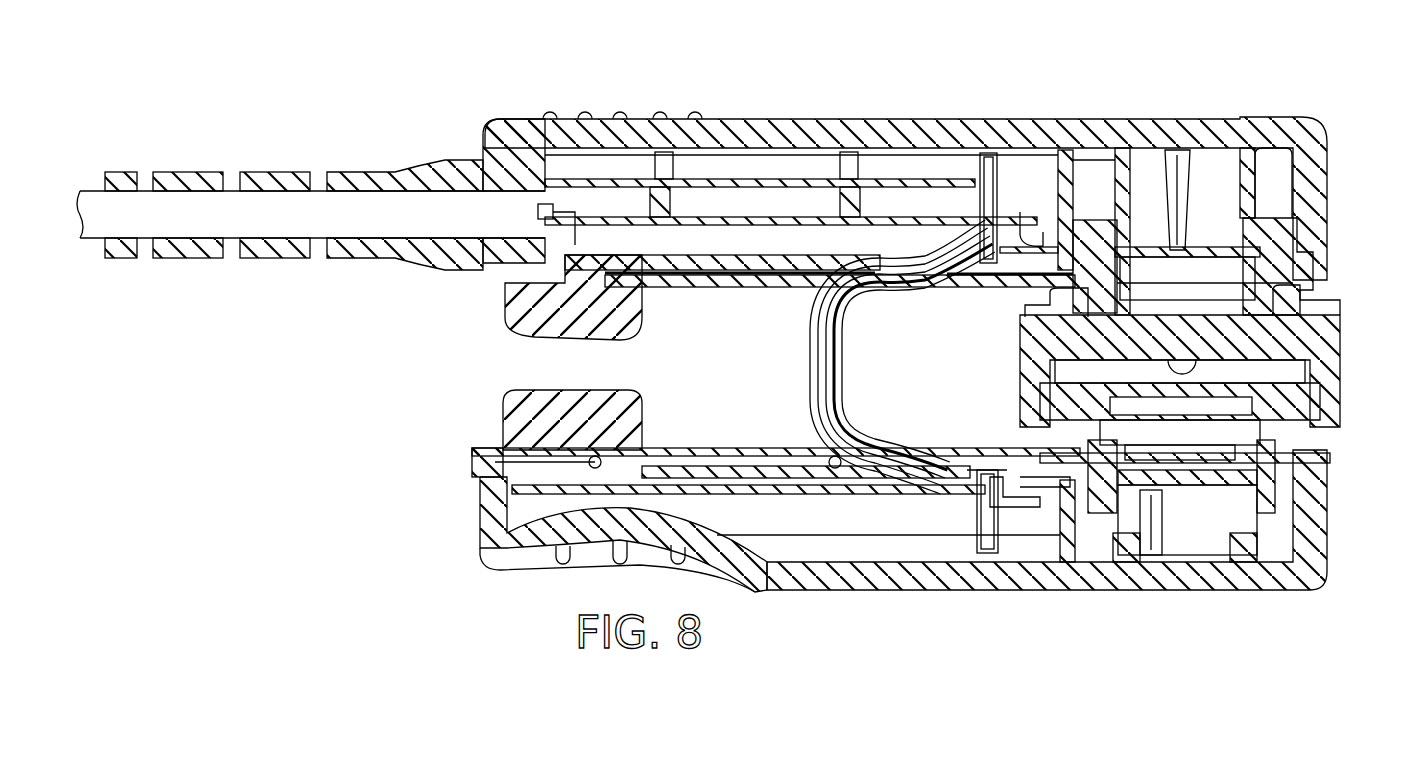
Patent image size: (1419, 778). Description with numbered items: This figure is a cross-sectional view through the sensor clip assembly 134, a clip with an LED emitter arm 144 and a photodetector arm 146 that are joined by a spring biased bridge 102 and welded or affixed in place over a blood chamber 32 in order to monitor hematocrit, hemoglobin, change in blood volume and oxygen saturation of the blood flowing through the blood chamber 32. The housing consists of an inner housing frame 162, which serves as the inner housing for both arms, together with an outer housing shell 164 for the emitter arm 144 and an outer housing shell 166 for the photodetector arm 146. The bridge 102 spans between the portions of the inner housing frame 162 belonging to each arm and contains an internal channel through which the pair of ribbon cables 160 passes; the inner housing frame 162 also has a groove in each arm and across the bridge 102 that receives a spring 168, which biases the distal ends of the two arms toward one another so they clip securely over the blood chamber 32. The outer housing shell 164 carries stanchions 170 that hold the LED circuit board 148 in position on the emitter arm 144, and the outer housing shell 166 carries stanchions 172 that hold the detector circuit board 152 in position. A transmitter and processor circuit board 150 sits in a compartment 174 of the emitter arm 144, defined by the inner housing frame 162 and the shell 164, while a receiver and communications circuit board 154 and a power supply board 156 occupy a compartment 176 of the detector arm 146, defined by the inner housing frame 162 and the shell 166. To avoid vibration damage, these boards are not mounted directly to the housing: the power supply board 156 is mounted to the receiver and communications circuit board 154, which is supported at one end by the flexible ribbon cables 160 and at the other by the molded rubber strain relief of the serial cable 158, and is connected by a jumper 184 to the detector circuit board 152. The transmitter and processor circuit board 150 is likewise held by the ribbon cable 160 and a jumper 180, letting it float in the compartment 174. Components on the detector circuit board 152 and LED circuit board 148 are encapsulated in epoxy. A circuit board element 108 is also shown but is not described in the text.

The blood chamber 32 is at (1340, 332).
The spring biased bridge 102 is at (806, 405).
The circuit board 108 is at (686, 448).
The sensor clip assembly 134 is at (686, 106).
The LED emitter arm 144 is at (943, 590).
The photodetector arm 146 is at (900, 122).
The LED circuit board 148 is at (1193, 482).
The transmitter and processor circuit board 150 is at (797, 496).
The detector circuit board 152 is at (1203, 253).
The receiver and communications circuit board 154 is at (687, 226).
The power supply board 156 is at (755, 178).
The serial cable 158 is at (274, 172).
The ribbon cables 160 is at (838, 375).
The inner housing frame 162 is at (518, 315).
The outer housing shell 164 is at (505, 547).
The outer housing shell 166 is at (496, 140).
The spring 168 is at (806, 323).
The stanchions 170 is at (1062, 515).
The stanchions 172 is at (1100, 200).
The compartment 174 is at (858, 515).
The compartment 176 is at (805, 168).
The jumper 180 is at (1018, 510).
The jumper 184 is at (1035, 230).